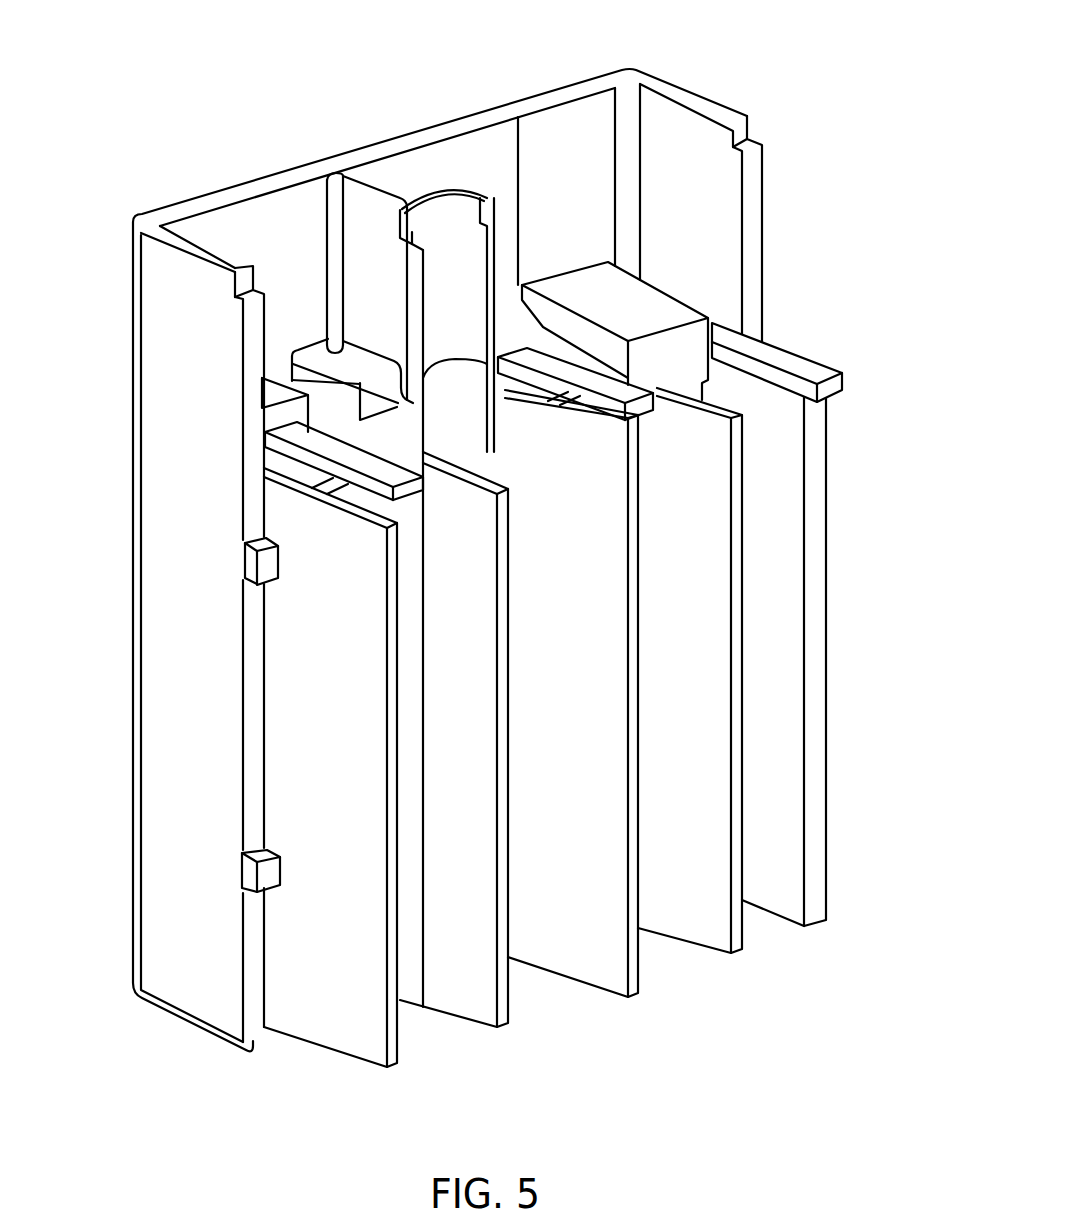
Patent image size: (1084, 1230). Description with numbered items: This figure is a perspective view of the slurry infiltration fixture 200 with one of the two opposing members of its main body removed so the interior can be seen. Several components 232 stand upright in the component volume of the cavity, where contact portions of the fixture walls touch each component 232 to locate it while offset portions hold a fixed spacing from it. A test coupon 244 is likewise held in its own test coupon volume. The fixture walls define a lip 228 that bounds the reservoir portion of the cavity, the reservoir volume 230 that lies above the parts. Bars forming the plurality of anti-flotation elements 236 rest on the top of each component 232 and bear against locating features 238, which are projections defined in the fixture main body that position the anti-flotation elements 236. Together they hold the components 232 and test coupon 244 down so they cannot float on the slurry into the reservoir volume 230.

The slurry infiltration fixture 200 is at (776, 44).
The lip 228 is at (620, 345).
The reservoir volume 230 is at (552, 338).
The component 232 is at (373, 1021).
The anti-flotation element 236 is at (832, 389).
The locating feature 238 is at (273, 390).
The test coupon 244 is at (815, 846).